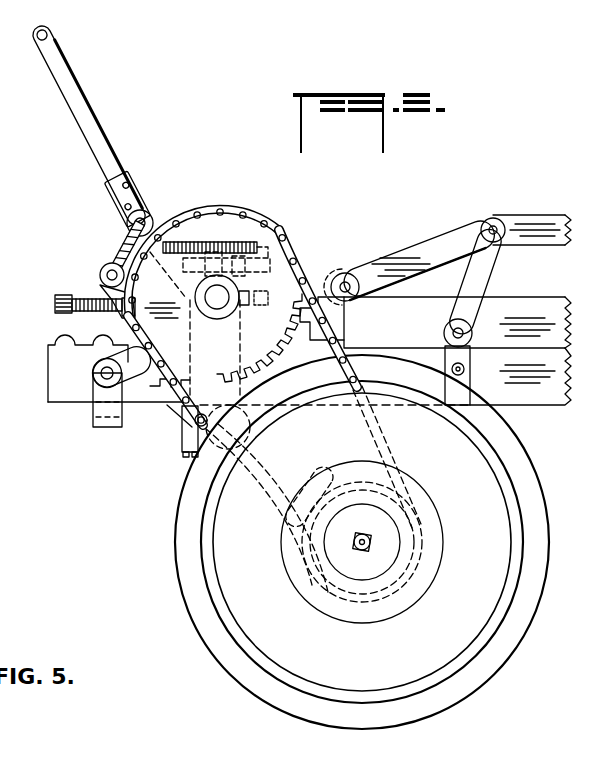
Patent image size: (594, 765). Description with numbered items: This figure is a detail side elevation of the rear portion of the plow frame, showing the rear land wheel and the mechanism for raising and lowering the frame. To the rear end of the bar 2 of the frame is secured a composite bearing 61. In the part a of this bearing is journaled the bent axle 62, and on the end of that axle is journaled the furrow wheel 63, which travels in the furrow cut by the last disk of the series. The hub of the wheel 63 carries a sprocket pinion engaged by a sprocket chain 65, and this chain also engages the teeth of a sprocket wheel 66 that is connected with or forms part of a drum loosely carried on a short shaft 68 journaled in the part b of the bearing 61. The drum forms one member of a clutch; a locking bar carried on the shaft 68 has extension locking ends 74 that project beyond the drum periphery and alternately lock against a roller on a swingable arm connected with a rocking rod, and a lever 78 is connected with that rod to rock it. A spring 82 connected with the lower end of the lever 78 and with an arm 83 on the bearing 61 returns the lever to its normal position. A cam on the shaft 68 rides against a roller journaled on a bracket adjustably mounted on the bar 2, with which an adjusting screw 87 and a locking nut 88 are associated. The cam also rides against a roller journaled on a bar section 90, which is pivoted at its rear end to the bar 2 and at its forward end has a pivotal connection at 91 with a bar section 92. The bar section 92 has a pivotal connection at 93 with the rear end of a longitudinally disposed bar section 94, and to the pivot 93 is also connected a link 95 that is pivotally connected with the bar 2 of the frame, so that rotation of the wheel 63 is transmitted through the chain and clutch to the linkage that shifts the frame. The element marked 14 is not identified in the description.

The bar 2 is at (60, 364).
The pawl 14 is at (321, 326).
The composite bearing 61 is at (184, 440).
The bent axle 62 is at (292, 462).
The furrow wheel 63 is at (183, 532).
The sprocket chain 65 is at (345, 333).
The sprocket wheel 66 is at (226, 344).
The short shaft 68 is at (217, 300).
The extension locking ends 74 is at (100, 283).
The lever 78 is at (82, 110).
The spring 82 is at (200, 250).
The arm 83 is at (254, 259).
The adjusting screw 87 is at (55, 306).
The locking nut 88 is at (120, 313).
The bar section 90 is at (320, 284).
The pivotal connection 91 is at (348, 282).
The bar section 92 is at (412, 250).
The pivotal connection 93 is at (497, 226).
The bar section 94 is at (538, 225).
The link 95 is at (490, 271).
The part of the bearing a is at (192, 426).
The part of the bearing b is at (152, 214).